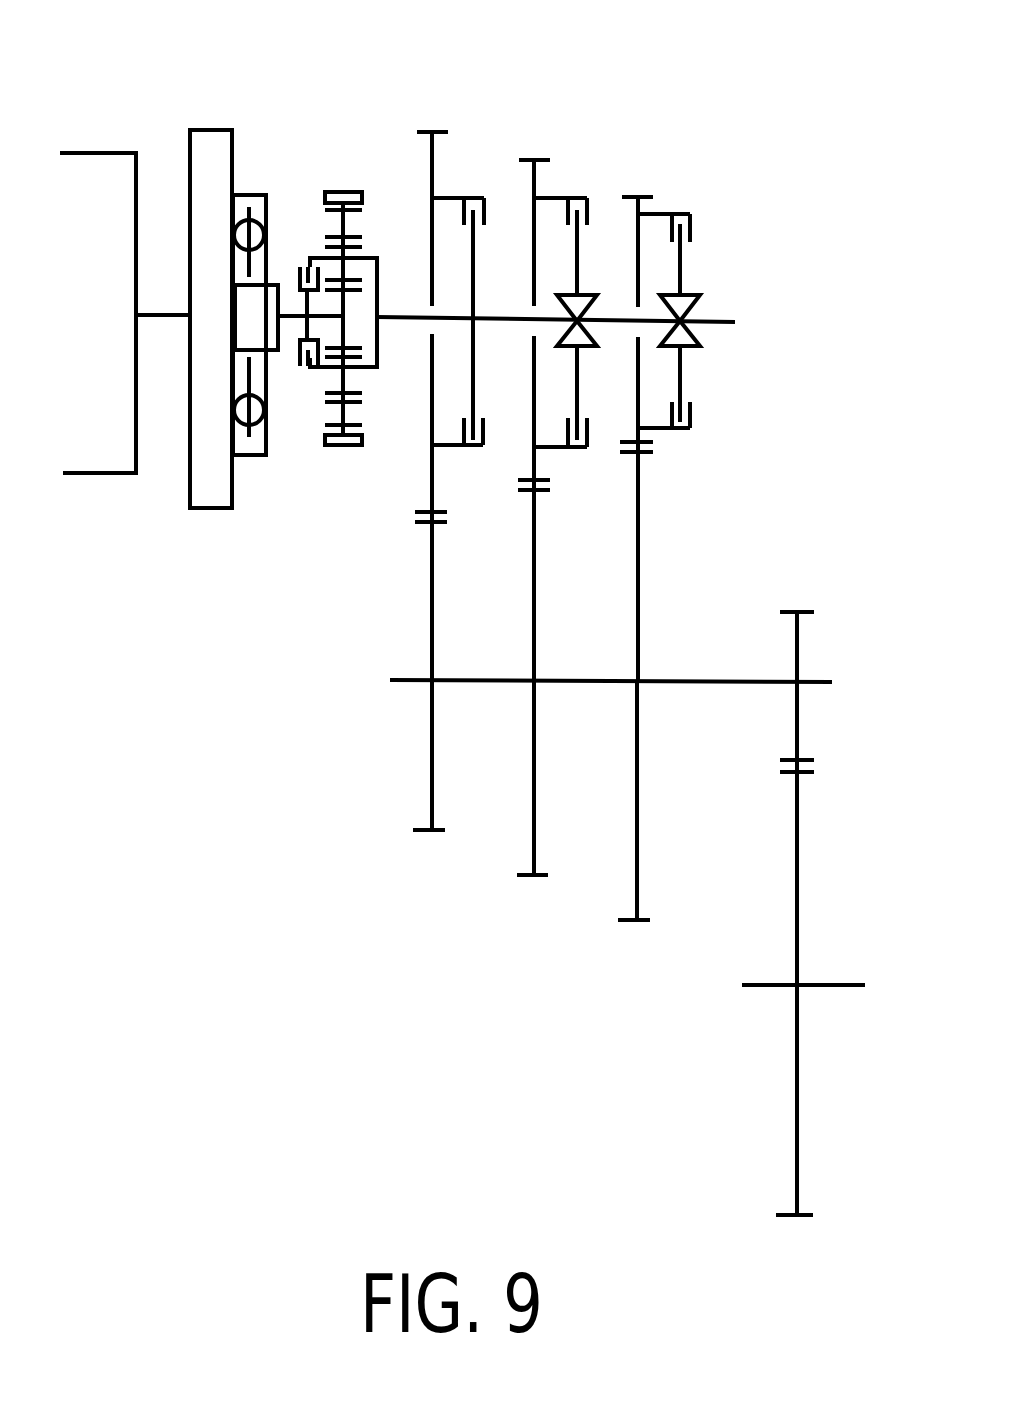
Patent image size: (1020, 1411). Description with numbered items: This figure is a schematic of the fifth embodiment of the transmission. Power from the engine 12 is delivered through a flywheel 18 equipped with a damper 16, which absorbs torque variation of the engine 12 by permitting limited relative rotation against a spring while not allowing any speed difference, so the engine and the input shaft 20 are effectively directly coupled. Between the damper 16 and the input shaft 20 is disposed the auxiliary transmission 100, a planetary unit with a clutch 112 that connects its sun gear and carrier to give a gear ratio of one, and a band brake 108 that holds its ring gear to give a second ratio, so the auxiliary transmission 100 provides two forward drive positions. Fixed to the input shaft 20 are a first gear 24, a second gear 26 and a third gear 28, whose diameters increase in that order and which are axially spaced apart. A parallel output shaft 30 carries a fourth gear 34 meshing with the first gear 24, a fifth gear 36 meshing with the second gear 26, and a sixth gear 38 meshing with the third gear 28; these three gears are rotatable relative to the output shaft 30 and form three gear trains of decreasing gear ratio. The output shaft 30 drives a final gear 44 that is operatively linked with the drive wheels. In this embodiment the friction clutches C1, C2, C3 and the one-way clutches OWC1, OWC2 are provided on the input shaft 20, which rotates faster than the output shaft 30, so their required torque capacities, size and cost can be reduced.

The engine 12 is at (118, 468).
The flywheel 18 is at (210, 498).
The damper 16 is at (266, 474).
The auxiliary transmission 100 is at (352, 104).
The clutch 112 is at (310, 368).
The band brake 108 is at (332, 192).
The input shaft 20 is at (722, 318).
The third gear 28 is at (434, 130).
The sixth gear 38 is at (422, 832).
The second gear 26 is at (538, 160).
The fifth gear 36 is at (530, 877).
The first gear 24 is at (648, 197).
The fourth gear 34 is at (640, 923).
The output shaft 30 is at (832, 681).
The final gear 44 is at (802, 775).
The friction clutch C3 is at (490, 455).
The friction clutch C2 is at (586, 462).
The friction clutch C1 is at (704, 456).
The one-way clutch OWC2 is at (580, 293).
The one-way clutch OWC1 is at (700, 300).